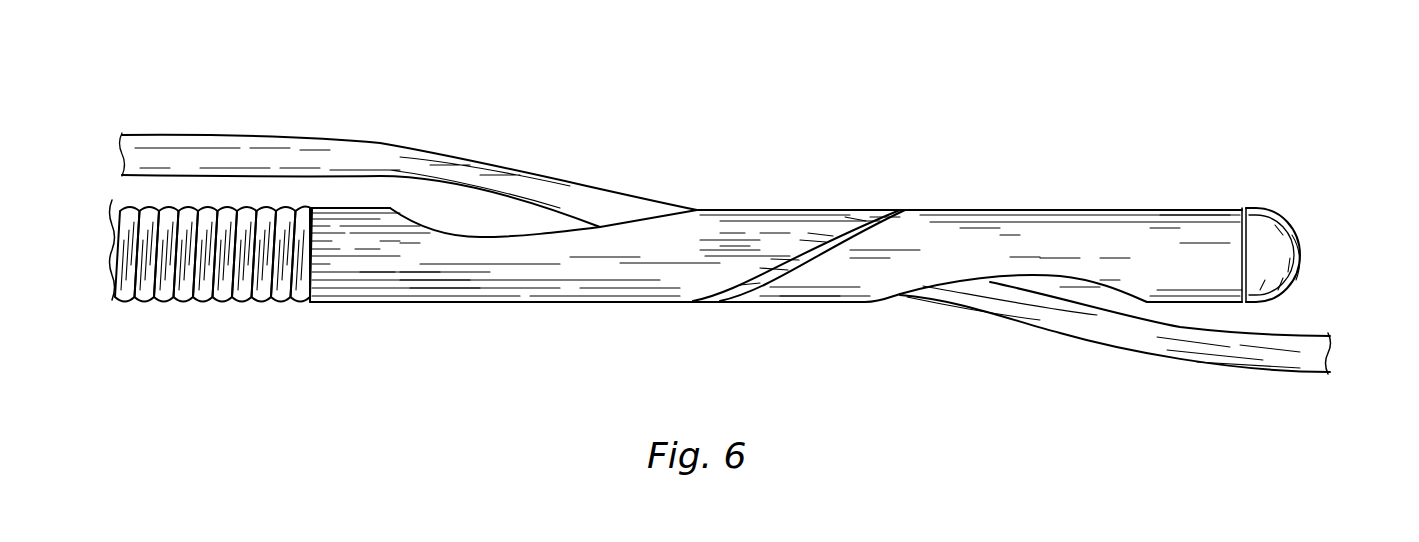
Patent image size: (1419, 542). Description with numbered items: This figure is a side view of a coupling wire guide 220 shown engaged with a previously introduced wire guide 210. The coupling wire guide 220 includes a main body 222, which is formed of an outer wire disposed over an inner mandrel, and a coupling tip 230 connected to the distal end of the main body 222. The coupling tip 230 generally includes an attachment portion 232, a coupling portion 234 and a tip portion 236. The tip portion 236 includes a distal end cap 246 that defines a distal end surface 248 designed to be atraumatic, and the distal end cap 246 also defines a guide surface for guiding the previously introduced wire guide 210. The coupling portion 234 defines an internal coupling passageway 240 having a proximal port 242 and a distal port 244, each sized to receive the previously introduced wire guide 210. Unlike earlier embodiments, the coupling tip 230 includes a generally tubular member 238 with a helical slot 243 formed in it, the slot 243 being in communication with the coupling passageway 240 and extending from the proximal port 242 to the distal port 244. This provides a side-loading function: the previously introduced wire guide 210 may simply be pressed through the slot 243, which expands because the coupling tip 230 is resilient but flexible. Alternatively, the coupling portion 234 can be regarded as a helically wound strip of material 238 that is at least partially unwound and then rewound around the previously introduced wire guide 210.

The coupling wire guide 220 is at (211, 78).
The previously introduced wire guide 210 is at (336, 160).
The main body 222 is at (202, 302).
The coupling tip 230 is at (671, 124).
The attachment portion 232 is at (353, 303).
The proximal port 242 is at (463, 233).
The generally tubular member 238 is at (765, 235).
The helical slot 243 is at (848, 228).
The internal coupling passageway 240 is at (757, 290).
The coupling portion 234 is at (805, 305).
The tip portion 236 is at (1158, 207).
The distal end cap 246 is at (1270, 237).
The distal end surface 248 is at (1300, 257).
The distal port 244 is at (1120, 288).